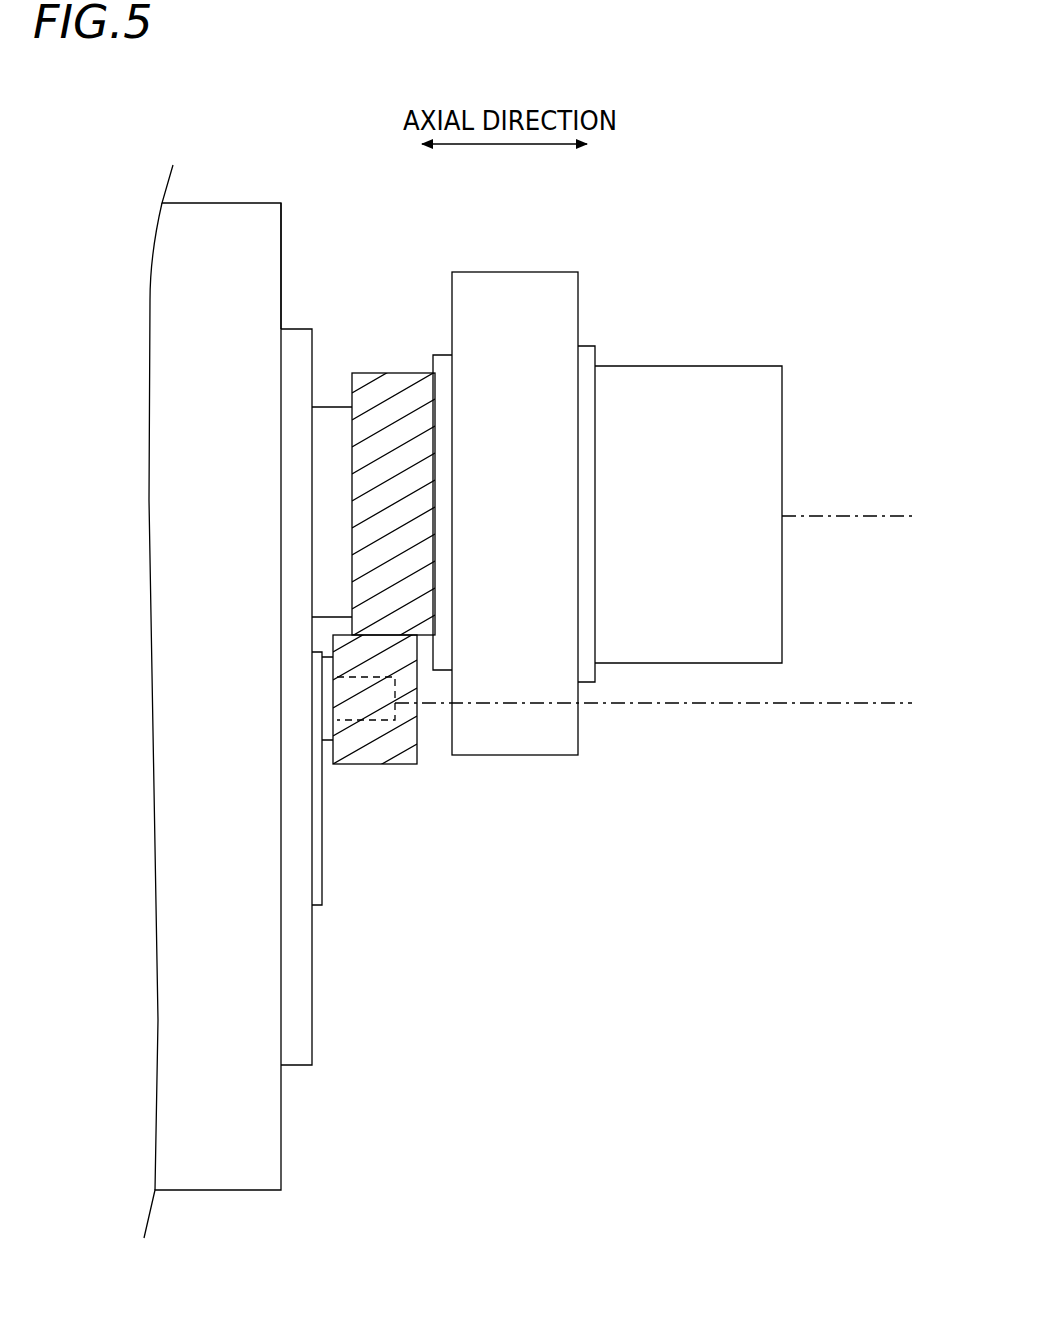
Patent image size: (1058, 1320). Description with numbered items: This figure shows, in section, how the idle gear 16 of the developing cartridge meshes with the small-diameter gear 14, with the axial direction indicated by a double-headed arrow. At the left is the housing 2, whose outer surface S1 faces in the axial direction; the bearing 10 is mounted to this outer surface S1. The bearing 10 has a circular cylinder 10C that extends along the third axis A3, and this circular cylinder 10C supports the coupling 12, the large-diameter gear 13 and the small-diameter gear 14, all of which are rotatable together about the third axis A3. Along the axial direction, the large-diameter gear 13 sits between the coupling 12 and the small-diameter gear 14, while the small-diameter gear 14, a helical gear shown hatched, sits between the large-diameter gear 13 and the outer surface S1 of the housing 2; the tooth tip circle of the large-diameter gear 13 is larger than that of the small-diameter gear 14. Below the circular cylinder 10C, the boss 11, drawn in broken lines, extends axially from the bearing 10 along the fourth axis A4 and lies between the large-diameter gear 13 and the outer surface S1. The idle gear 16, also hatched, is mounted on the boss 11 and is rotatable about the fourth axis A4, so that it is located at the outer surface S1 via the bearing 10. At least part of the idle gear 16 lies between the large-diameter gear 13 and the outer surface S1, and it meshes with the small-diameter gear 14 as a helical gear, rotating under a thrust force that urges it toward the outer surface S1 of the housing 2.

The housing 2 is at (214, 218).
The bearing 10 is at (222, 682).
The circular cylinder 10C is at (330, 430).
The outer surface S1 is at (282, 248).
The boss 11 is at (397, 695).
The coupling 12 is at (699, 371).
The large-diameter gear 13 is at (529, 284).
The small-diameter gear 14 is at (383, 371).
The idle gear 16 is at (372, 767).
The third axis A3 is at (858, 514).
The fourth axis A4 is at (852, 701).